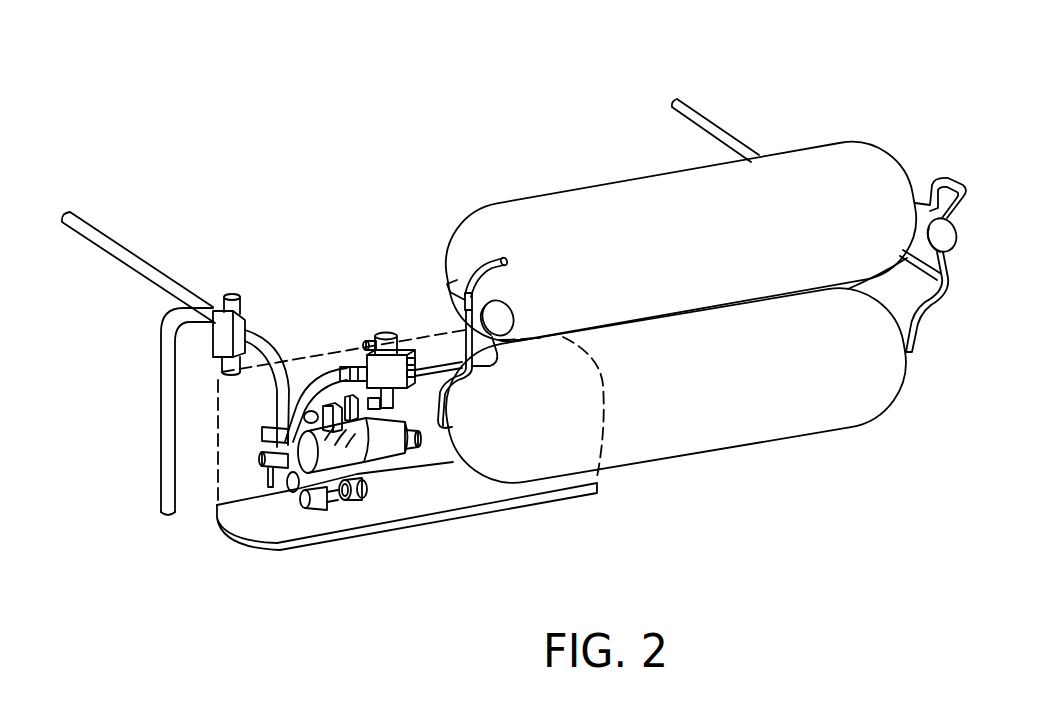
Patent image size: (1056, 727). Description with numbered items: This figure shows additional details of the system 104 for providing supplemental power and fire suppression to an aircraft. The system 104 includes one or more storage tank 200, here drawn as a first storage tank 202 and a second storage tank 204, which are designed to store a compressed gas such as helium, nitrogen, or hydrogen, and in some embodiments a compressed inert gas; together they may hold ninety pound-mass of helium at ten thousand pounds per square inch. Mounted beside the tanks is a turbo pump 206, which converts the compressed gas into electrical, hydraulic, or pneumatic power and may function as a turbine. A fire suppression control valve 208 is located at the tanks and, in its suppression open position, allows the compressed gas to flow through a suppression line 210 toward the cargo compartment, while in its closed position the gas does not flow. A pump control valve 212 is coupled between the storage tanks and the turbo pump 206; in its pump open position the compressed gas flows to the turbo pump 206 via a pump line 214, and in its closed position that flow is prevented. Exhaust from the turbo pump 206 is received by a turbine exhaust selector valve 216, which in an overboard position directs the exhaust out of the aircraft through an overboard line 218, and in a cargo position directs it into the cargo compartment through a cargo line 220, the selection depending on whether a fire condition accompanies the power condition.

The system 104 is at (567, 58).
The storage tank 200 is at (604, 188).
The first storage tank 202 is at (655, 269).
The second storage tank 204 is at (688, 409).
The turbo pump 206 is at (342, 458).
The fire suppression control valve 208 is at (962, 226).
The suppression line 210 is at (713, 117).
The pump control valve 212 is at (403, 350).
The pump line 214 is at (323, 383).
The turbine exhaust selector valve 216 is at (224, 297).
The overboard line 218 is at (161, 446).
The cargo line 220 is at (91, 241).